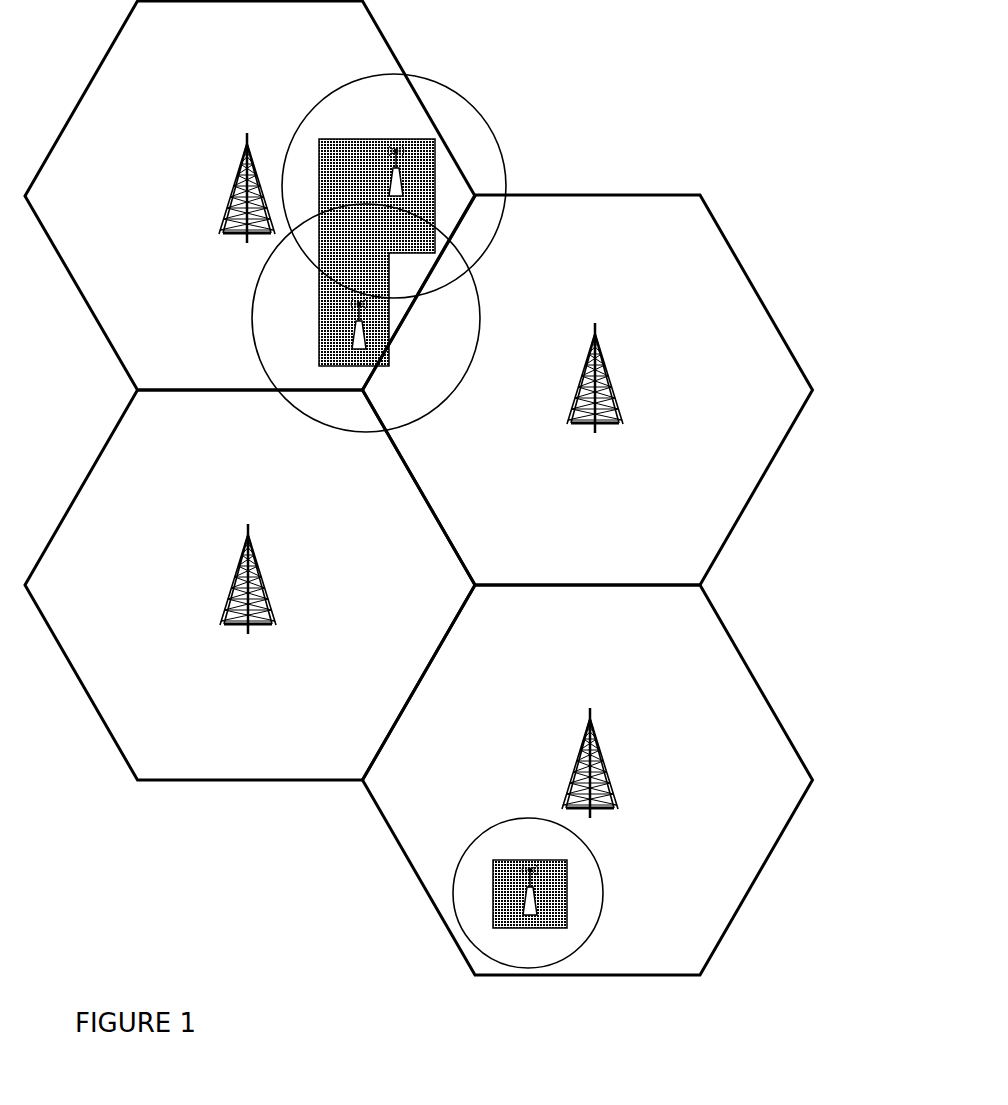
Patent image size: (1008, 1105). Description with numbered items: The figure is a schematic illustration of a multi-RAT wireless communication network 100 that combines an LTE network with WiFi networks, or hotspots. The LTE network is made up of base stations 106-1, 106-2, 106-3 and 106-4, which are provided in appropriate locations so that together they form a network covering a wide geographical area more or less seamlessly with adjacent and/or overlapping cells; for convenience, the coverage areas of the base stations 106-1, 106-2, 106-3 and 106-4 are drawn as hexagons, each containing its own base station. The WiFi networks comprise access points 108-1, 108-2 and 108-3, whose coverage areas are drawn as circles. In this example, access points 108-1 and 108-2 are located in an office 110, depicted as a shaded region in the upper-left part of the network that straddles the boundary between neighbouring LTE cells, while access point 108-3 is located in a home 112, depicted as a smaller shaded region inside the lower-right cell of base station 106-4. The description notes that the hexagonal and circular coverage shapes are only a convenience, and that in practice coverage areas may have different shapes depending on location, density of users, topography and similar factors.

The multi-RAT wireless communication network 100 is at (620, 33).
The base station 106-1 is at (242, 176).
The base station 106-2 is at (586, 372).
The base station 106-3 is at (240, 565).
The base station 106-4 is at (578, 763).
The access point 108-1 is at (386, 183).
The access point 108-2 is at (367, 336).
The access point 108-3 is at (533, 917).
The office 110 is at (319, 294).
The home 112 is at (567, 907).